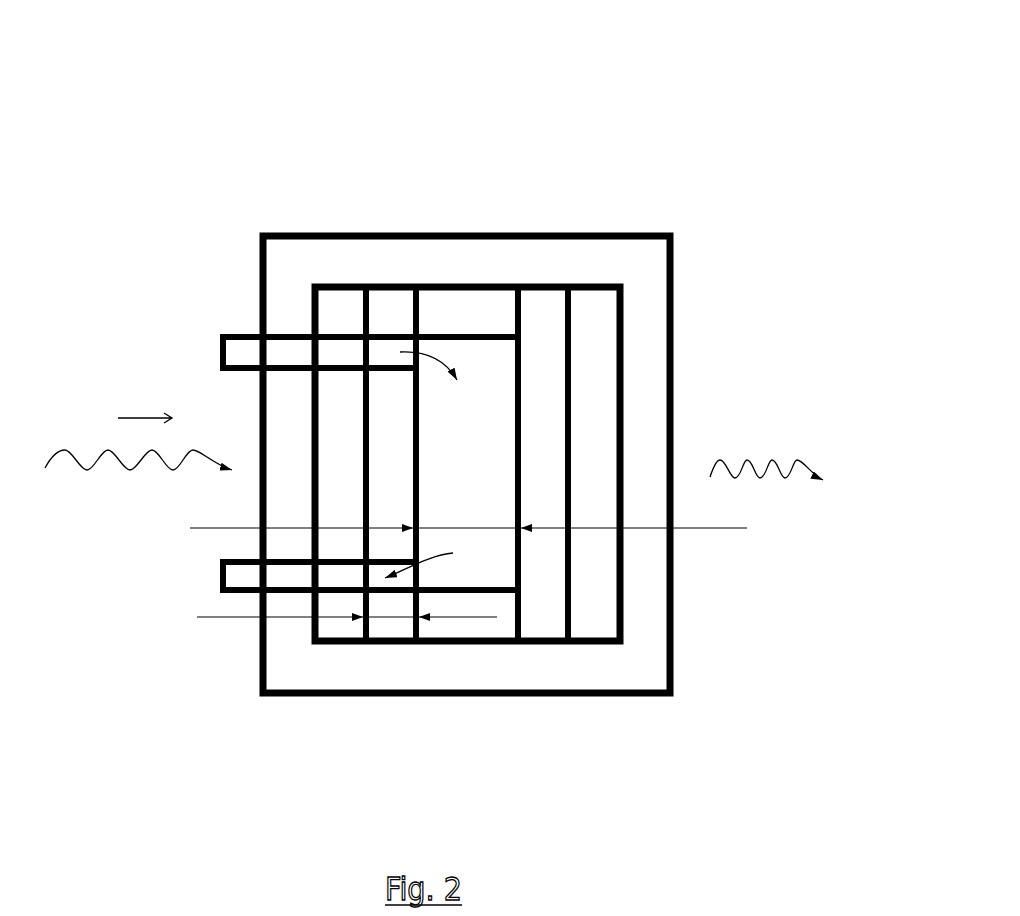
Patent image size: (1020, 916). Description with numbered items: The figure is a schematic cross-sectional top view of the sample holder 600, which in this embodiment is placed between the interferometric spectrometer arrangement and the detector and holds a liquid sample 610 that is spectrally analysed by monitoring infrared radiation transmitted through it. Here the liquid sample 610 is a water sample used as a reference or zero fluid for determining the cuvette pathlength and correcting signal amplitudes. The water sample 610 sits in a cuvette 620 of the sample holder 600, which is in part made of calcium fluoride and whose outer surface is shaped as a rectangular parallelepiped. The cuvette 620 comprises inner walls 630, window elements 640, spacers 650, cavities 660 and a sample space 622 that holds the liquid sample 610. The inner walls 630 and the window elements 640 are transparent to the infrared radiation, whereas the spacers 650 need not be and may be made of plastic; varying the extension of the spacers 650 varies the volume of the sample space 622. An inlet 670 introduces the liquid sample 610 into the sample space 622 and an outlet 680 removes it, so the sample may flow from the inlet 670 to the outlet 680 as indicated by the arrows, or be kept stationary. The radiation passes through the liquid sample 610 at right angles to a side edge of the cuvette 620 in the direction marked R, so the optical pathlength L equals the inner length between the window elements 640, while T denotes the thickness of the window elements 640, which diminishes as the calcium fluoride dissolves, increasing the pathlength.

The sample holder 600 is at (648, 93).
The liquid sample 610 is at (490, 445).
The cuvette 620 is at (695, 270).
The sample space 622 is at (497, 373).
The inner walls 630 is at (593, 267).
The window elements 640 is at (393, 400).
The spacers 650 is at (466, 315).
The cavities 660 is at (332, 397).
The inlet 670 is at (223, 328).
The outlet 680 is at (208, 575).